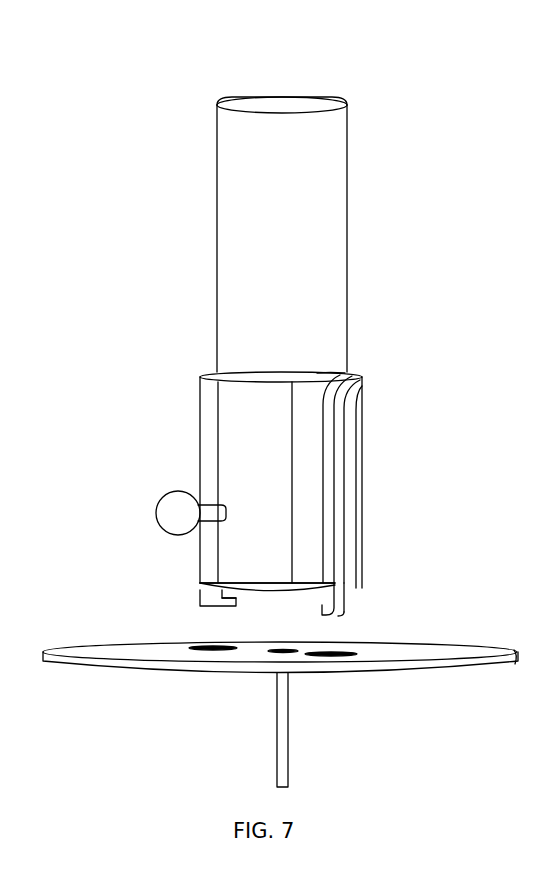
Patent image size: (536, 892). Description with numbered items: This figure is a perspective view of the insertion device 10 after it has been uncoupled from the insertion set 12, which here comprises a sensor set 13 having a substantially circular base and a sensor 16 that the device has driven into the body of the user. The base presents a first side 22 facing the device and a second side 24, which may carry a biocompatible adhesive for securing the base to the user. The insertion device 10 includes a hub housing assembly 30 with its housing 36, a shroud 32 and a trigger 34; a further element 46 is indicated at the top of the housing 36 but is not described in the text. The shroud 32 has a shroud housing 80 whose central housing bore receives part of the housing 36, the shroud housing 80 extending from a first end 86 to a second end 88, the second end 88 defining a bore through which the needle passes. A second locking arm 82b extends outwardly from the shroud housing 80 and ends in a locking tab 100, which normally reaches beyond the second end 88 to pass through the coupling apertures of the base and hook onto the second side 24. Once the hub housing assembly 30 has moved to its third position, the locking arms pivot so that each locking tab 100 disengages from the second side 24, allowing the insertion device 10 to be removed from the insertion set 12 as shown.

The insertion device 10 is at (456, 162).
The insertion set 12 is at (130, 607).
The sensor set 13 is at (410, 628).
The sensor 16 is at (260, 732).
The first side 22 is at (479, 648).
The second side 24 is at (481, 671).
The hub housing assembly 30 is at (390, 137).
The shroud 32 is at (390, 447).
The trigger 34 is at (166, 518).
The housing 36 is at (362, 256).
The top cap 46 is at (320, 83).
The shroud housing 80 is at (393, 540).
The second locking arm 82b is at (362, 498).
The first end 86 is at (350, 376).
The second end 88 is at (268, 593).
The locking tab 100 is at (200, 596).